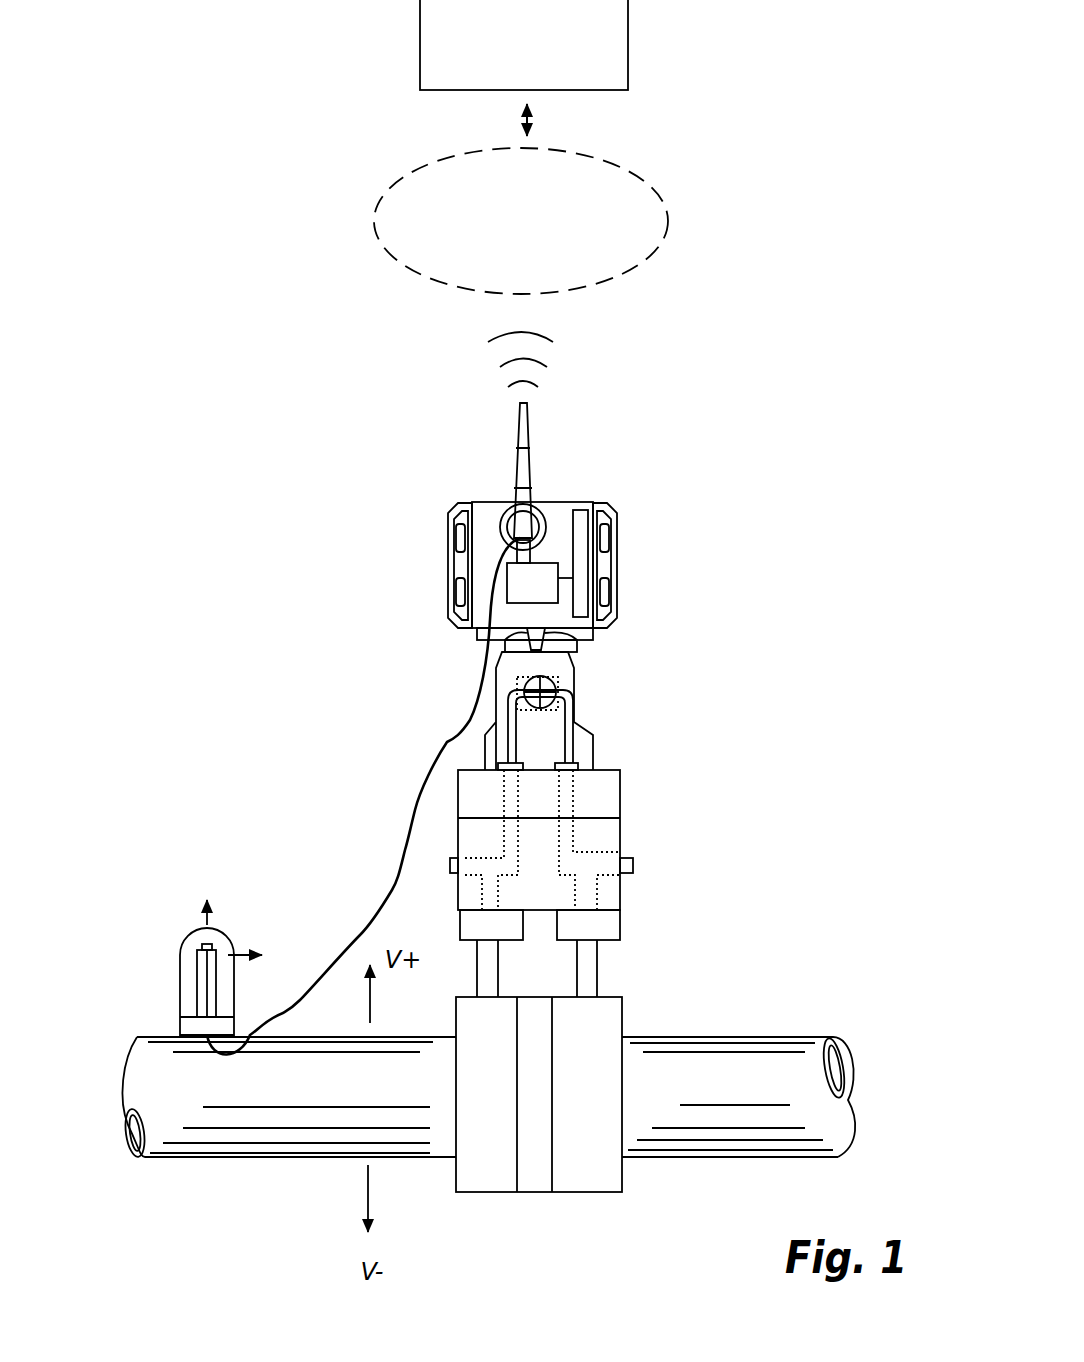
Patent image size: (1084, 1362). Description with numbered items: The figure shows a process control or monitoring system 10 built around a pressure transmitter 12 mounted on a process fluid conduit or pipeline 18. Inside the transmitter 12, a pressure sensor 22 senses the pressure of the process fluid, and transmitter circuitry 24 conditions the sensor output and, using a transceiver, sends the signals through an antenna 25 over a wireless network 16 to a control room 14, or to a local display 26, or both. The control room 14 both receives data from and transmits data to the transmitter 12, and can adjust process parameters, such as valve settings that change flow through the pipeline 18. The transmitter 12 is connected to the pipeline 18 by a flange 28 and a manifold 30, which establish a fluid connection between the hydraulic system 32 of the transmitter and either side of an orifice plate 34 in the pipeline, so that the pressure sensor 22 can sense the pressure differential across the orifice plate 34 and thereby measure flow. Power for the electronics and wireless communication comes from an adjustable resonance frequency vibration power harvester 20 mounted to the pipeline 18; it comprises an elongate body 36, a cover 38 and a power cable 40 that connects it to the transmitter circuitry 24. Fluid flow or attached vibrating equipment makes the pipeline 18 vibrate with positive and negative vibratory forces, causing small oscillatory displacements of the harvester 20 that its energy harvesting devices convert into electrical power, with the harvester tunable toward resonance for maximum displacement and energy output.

The process control or monitoring system 10 is at (803, 396).
The pressure transmitter 12 is at (458, 486).
The control room 14 is at (420, 38).
The wireless network 16 is at (374, 224).
The process fluid conduit or pipeline 18 is at (730, 1015).
The adjustable resonance frequency vibration power harvester 20 is at (258, 908).
The pressure sensor 22 is at (558, 690).
The transmitter circuitry 24 is at (520, 578).
The antenna 25 is at (522, 448).
The local display 26 is at (567, 512).
The flange 28 is at (607, 795).
The manifold 30 is at (607, 890).
The hydraulic system 32 is at (598, 738).
The orifice plate 34 is at (533, 1172).
The elongate body 36 is at (200, 978).
The cover 38 is at (182, 955).
The power cable 40 is at (447, 742).